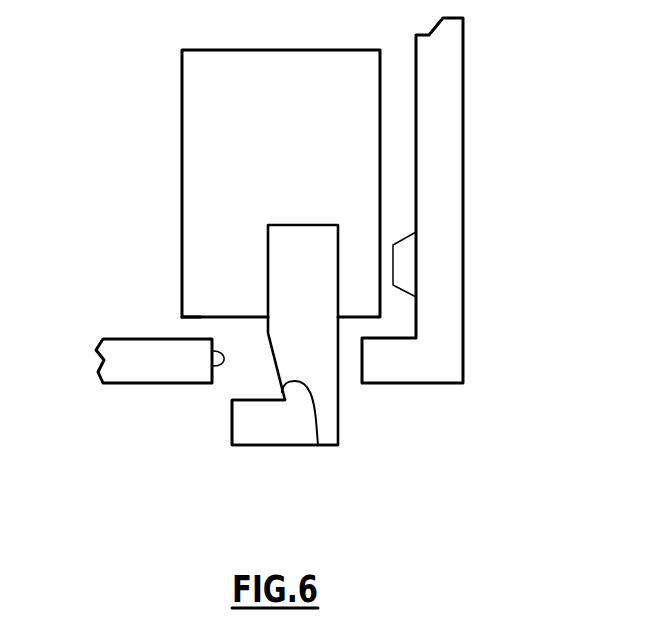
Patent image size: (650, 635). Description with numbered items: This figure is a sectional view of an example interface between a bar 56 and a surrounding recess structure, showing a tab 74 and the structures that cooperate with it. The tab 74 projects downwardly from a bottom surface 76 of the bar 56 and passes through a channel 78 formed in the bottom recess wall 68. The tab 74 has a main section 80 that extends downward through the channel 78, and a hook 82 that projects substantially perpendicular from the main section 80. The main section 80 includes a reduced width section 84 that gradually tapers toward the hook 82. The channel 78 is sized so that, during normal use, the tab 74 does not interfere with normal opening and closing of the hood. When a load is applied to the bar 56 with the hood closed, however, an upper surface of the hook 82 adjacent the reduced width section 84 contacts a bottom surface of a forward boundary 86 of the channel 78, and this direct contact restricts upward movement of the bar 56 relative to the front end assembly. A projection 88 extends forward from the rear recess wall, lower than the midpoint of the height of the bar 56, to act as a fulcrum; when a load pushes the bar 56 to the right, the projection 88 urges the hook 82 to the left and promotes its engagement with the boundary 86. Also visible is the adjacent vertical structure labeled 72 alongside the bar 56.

The bar 56 is at (220, 113).
The bottom recess wall 68 is at (155, 367).
The side wall member 72 is at (418, 142).
The tab 74 is at (288, 452).
The bottom surface 76 is at (193, 320).
The channel 78 is at (243, 363).
The main section 80 is at (287, 280).
The hook 82 is at (258, 425).
The reduced width section 84 is at (318, 445).
The forward boundary 86 is at (212, 351).
The projection 88 is at (405, 262).